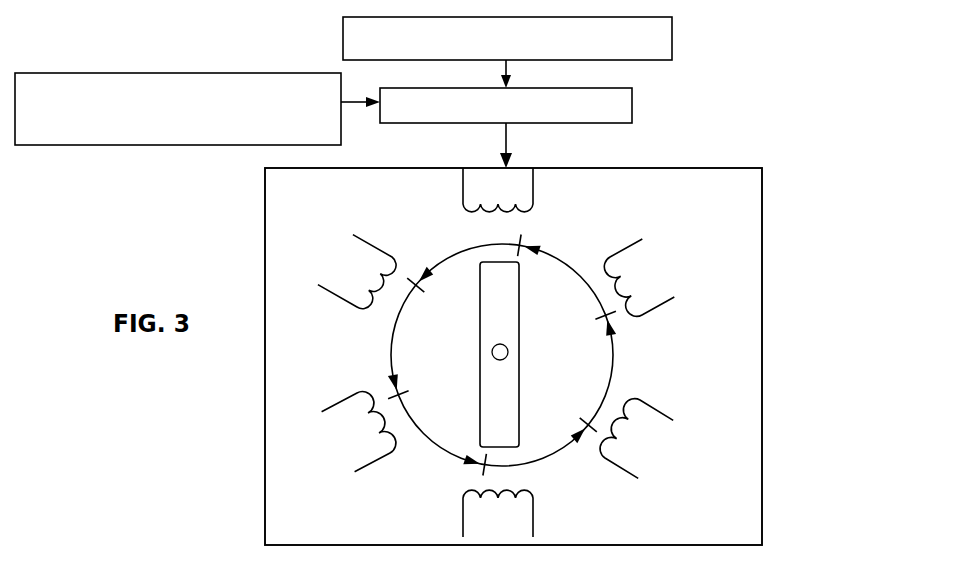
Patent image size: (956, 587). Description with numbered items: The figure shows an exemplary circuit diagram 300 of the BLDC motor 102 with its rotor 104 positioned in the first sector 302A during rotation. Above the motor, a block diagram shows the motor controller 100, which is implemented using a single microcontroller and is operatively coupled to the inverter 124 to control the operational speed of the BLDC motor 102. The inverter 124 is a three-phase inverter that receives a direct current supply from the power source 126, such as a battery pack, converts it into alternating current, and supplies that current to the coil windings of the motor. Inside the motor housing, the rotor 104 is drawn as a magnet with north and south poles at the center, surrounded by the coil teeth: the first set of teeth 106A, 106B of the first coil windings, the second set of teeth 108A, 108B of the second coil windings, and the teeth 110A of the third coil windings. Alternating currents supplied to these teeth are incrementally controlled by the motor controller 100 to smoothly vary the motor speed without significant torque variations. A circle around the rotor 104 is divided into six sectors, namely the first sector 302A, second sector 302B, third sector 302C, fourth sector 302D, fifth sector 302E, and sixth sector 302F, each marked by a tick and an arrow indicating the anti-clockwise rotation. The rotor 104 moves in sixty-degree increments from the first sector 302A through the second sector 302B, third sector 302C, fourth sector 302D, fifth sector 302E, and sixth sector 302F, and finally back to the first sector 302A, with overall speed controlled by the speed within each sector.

The motor controller 100 is at (197, 109).
The power source 126 is at (507, 52).
The inverter 124 is at (506, 128).
The BLDC motor 102 is at (763, 336).
The circuit diagram 300 is at (772, 275).
The rotor 104 is at (520, 345).
The first set of teeth 106A is at (462, 531).
The first set of teeth 106B is at (533, 188).
The second set of teeth 108A is at (355, 472).
The second set of teeth 108B is at (665, 305).
The third set of teeth 110A is at (353, 235).
The first sector 302A is at (537, 464).
The second sector 302B is at (612, 347).
The third sector 302C is at (565, 262).
The fourth sector 302D is at (429, 267).
The fifth sector 302E is at (393, 352).
The sixth sector 302F is at (427, 432).